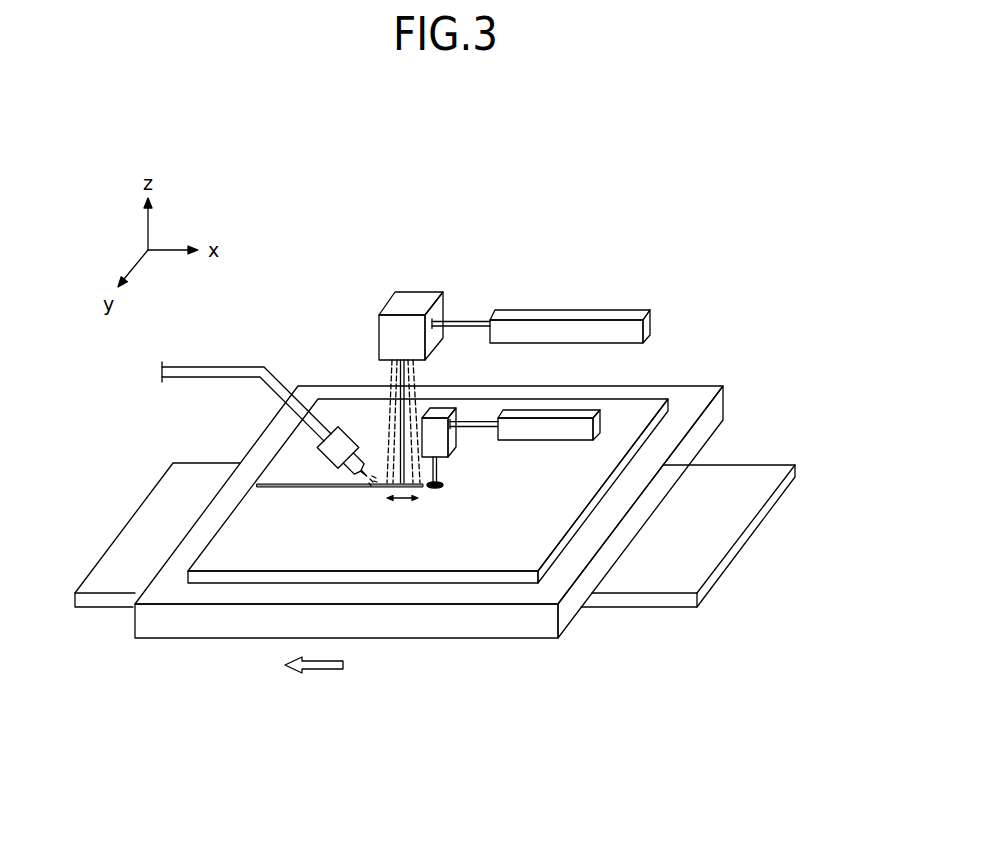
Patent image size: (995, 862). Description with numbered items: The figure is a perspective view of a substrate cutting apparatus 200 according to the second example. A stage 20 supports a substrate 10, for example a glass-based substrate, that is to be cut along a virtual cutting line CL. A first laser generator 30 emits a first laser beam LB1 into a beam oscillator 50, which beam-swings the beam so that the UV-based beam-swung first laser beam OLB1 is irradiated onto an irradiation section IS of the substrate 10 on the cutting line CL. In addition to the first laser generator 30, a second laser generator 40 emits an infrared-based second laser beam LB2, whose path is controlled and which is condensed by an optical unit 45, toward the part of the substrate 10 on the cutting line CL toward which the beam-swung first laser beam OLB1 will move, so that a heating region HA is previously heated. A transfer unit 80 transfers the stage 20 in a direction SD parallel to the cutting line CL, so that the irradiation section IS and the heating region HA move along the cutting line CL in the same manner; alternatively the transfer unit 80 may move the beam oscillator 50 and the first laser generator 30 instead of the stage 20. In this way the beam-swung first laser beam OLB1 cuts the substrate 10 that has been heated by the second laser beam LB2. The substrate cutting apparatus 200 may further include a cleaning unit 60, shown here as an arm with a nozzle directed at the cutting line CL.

The substrate cutting apparatus 200 is at (440, 170).
The substrate 10 is at (547, 516).
The stage 20 is at (577, 629).
The first laser generator 30 is at (581, 297).
The second laser generator 40 is at (575, 399).
The optical unit 45 is at (451, 395).
The beam oscillator 50 is at (422, 282).
The cleaning unit 60 is at (233, 359).
The transfer unit 80 is at (762, 546).
The first laser beam LB1 is at (463, 320).
The second laser beam LB2 is at (485, 421).
The beam-swung first laser beam OLB1 is at (396, 413).
The cutting line CL is at (293, 487).
The irradiation section IS is at (402, 503).
The heating region HA is at (441, 488).
The transfer direction SD is at (322, 673).